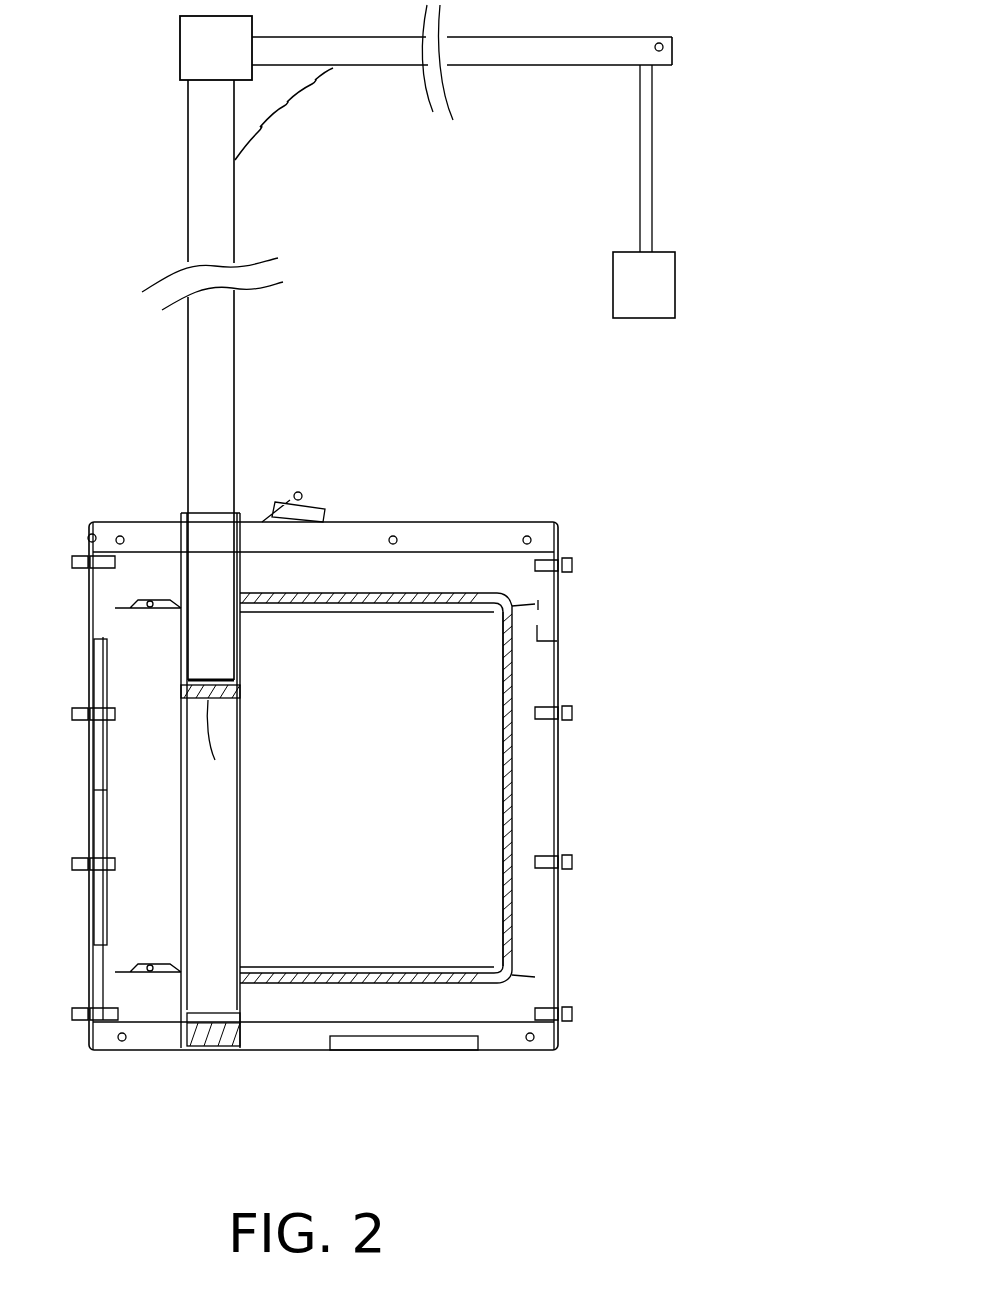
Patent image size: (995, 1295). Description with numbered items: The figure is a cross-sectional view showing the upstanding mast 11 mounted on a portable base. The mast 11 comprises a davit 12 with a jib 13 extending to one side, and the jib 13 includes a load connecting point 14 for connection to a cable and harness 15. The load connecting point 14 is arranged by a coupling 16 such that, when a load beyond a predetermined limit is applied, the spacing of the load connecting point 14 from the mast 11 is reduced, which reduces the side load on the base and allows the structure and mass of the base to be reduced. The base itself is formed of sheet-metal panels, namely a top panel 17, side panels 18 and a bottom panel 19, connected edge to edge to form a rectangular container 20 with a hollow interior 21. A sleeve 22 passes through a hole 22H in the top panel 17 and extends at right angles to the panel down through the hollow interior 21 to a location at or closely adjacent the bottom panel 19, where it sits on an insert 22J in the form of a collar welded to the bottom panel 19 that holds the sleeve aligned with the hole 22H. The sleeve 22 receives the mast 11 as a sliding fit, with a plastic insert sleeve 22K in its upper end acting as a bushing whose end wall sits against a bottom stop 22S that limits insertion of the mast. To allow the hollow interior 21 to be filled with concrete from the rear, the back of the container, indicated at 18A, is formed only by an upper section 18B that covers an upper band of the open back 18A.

The mast 11 is at (228, 367).
The davit 12 is at (304, 135).
The jib 13 is at (538, 58).
The load connecting point 14 is at (668, 42).
The cable and harness 15 is at (652, 158).
The coupling 16 is at (318, 97).
The top panel 17 is at (450, 522).
The side panels 18 is at (540, 763).
The open back 18A is at (560, 923).
The upper section 18B is at (548, 606).
The bottom panel 19 is at (390, 1055).
The rectangular container 20 is at (578, 688).
The hollow interior 21 is at (470, 852).
The sleeve 22 is at (240, 722).
The hole 22H is at (180, 519).
The insert 22J is at (195, 1030).
The plastic insert sleeve 22K is at (233, 623).
The bottom stop 22S is at (215, 760).